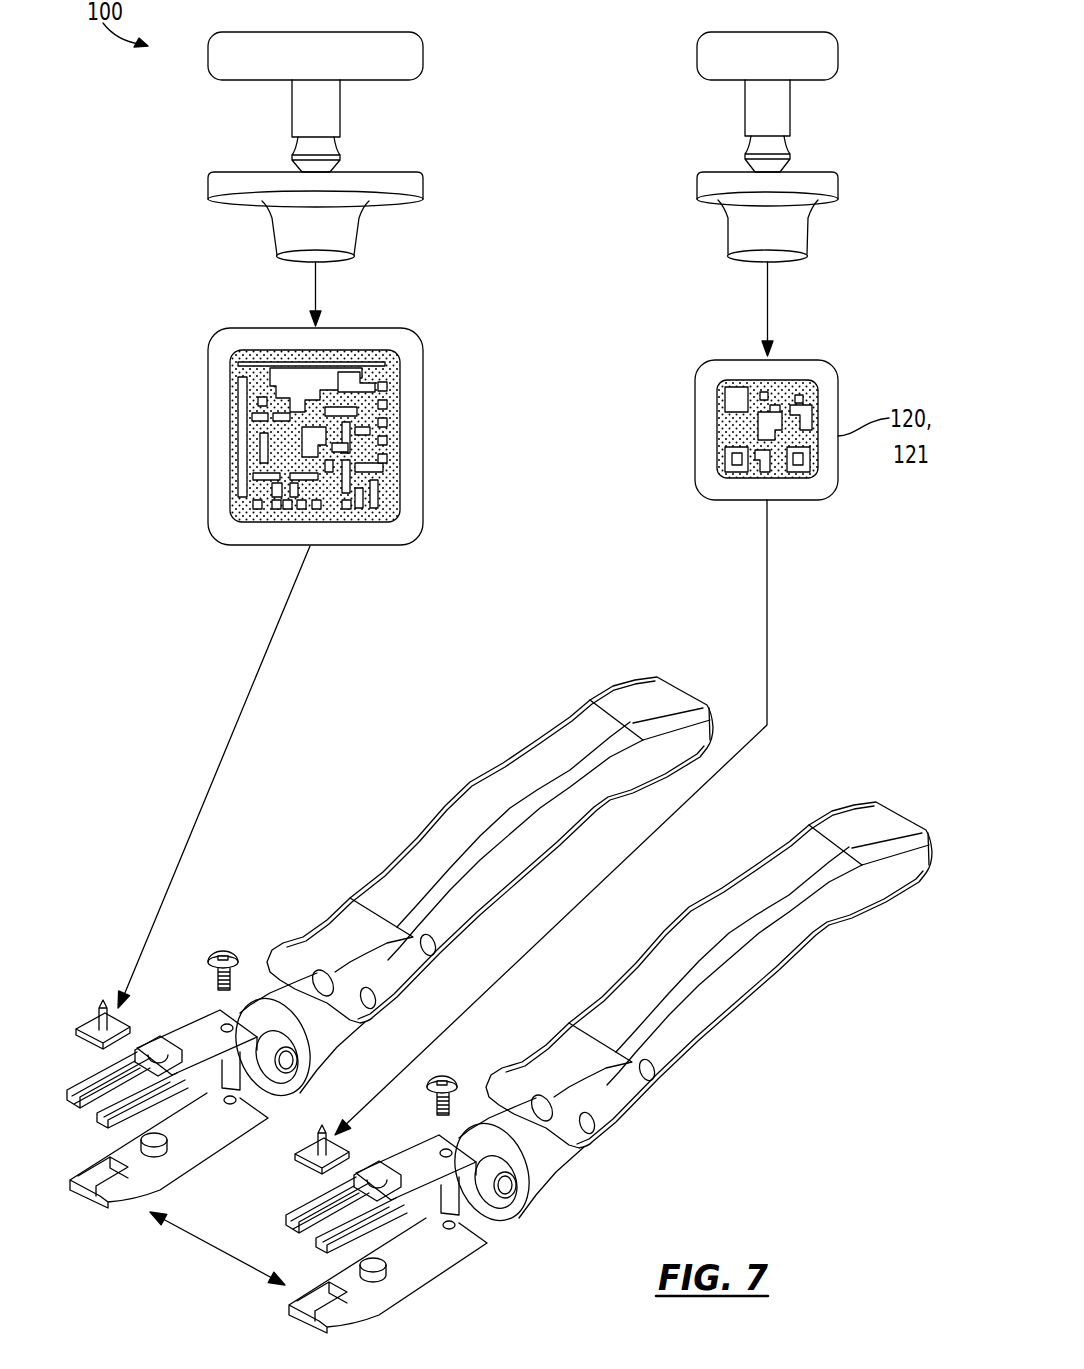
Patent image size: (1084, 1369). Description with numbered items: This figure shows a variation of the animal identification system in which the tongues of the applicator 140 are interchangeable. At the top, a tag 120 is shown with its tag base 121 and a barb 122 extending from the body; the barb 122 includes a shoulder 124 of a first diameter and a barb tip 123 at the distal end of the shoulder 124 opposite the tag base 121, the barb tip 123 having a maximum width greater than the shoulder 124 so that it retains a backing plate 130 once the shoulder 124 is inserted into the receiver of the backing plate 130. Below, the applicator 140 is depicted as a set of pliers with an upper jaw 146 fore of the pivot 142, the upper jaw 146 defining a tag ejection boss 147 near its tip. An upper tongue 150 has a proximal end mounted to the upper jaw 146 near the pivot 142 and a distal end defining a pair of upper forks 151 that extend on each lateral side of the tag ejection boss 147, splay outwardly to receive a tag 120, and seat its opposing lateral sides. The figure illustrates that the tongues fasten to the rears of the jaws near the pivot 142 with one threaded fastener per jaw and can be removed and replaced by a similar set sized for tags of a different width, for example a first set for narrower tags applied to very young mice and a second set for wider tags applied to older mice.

The tag 120 is at (813, 58).
The tag base 121 is at (838, 53).
The barb 122 is at (837, 129).
The barb tip 123 is at (754, 165).
The shoulder 124 is at (792, 112).
The backing plate 130 is at (755, 228).
The applicator 140 is at (709, 975).
The pivot 142 is at (532, 1166).
The upper jaw 146 is at (404, 1275).
The tag ejection boss 147 is at (364, 1308).
The upper tongue 150 is at (294, 1197).
The upper forks 151 is at (294, 1197).